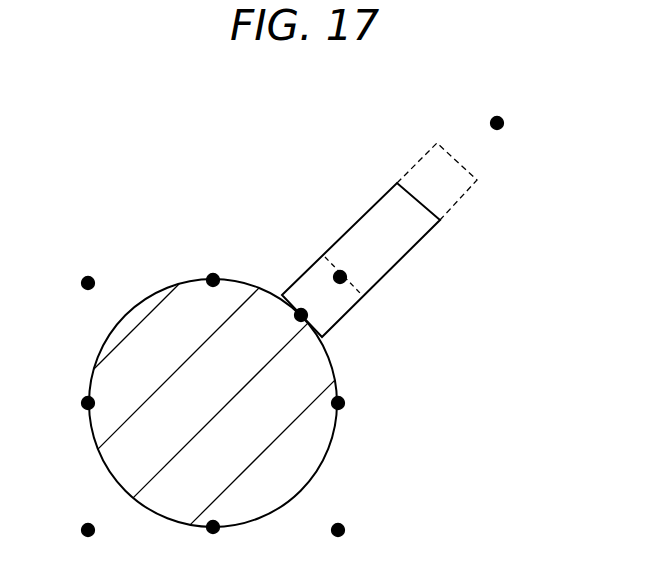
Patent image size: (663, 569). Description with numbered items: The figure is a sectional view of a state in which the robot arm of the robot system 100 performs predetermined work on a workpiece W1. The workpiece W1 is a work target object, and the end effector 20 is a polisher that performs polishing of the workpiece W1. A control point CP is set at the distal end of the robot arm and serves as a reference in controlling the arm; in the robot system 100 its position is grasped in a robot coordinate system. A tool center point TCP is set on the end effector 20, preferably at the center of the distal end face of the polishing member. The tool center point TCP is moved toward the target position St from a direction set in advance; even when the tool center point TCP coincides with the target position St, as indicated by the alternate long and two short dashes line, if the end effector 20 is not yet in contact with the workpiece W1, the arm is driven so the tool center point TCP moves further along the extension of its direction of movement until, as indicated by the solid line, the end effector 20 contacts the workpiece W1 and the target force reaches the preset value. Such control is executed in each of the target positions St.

The robot system 100 is at (95, 136).
The workpiece W1 is at (307, 453).
The target position St is at (343, 282).
The end effector 20 is at (458, 200).
The tool center point TCP is at (302, 313).
The control point CP is at (505, 123).